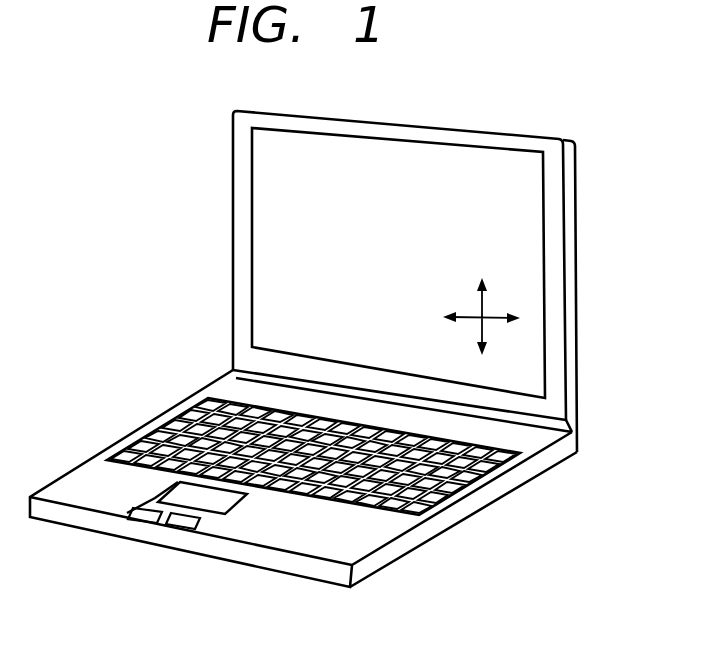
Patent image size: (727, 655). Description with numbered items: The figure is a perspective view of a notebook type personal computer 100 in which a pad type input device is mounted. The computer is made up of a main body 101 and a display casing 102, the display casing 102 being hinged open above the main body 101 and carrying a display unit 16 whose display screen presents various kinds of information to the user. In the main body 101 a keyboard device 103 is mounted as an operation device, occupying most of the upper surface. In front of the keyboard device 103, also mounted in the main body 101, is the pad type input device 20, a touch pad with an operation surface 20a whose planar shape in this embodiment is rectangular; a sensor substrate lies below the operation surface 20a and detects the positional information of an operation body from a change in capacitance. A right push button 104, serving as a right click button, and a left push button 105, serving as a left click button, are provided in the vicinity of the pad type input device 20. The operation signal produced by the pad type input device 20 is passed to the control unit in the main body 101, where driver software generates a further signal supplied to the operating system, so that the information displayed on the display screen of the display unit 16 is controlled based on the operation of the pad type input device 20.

The notebook type personal computer 100 is at (124, 184).
The display unit 16 is at (412, 160).
The display casing 102 is at (578, 233).
The main body 101 is at (478, 505).
The keyboard device 103 is at (137, 433).
The pad type input device 20 is at (155, 500).
The operation surface 20a is at (210, 502).
The right push button 104 is at (185, 526).
The left push button 105 is at (142, 523).